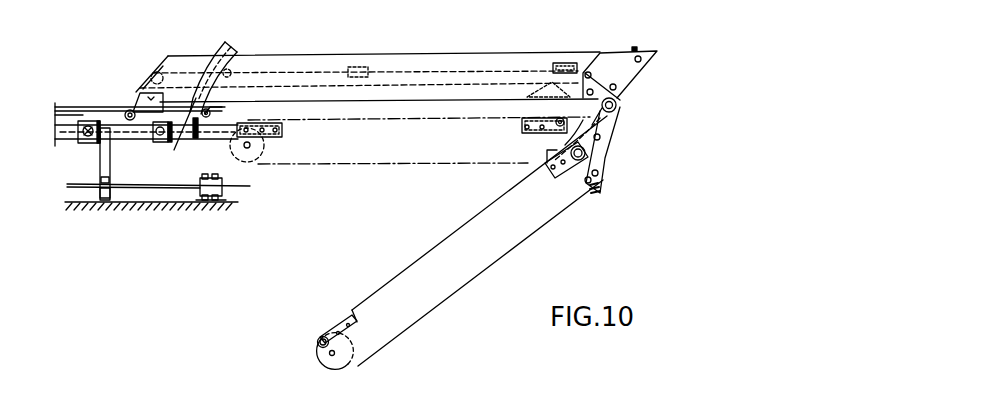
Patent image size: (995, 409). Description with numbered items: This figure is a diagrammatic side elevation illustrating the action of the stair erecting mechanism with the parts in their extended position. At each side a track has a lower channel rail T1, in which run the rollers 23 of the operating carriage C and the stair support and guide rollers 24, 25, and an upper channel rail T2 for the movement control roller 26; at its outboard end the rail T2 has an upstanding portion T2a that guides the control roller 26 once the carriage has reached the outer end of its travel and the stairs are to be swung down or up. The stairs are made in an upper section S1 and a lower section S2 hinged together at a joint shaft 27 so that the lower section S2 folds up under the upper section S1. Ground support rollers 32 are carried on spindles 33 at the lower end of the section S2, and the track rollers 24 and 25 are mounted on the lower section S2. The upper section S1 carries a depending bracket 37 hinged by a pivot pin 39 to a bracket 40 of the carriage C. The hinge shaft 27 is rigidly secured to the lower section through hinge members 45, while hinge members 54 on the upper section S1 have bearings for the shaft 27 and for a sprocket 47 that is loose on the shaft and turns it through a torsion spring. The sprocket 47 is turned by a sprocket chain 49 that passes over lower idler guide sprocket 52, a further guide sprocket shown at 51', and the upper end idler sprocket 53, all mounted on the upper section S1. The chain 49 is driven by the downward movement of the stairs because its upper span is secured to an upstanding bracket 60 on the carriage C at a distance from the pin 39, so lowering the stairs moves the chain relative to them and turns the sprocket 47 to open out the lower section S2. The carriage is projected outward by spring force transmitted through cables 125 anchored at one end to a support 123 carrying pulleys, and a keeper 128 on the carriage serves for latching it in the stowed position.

The upper stair section S1 is at (368, 101).
The lower stair section S2 is at (454, 290).
The sprocket chain 49 is at (404, 86).
The upper end idler sprocket 53 is at (155, 85).
The upstanding portion T2a is at (236, 46).
The lower idler guide sprocket 52 is at (560, 63).
The hinge member 54 is at (648, 62).
The sprocket 47 is at (620, 106).
The joint shaft 27 is at (618, 113).
The hinge member 45 is at (605, 178).
The stair support and guide roller 24 is at (582, 120).
The bracket 51' is at (516, 108).
The stair support and guide roller 25 is at (252, 116).
The spindle 33 is at (325, 354).
The ground support roller 32 is at (337, 369).
The upper channel rail T2 is at (78, 107).
The keeper 128 is at (55, 115).
The lower channel rail T1 is at (58, 145).
The roller 23 is at (88, 142).
The operating carriage C is at (127, 142).
The movement control roller 26 is at (128, 110).
The upstanding bracket 60 is at (192, 124).
The bracket 40 is at (207, 120).
The pivot pin 39 is at (213, 130).
The depending bracket 37 is at (213, 112).
The cable 125 is at (123, 190).
The support 123 is at (224, 188).